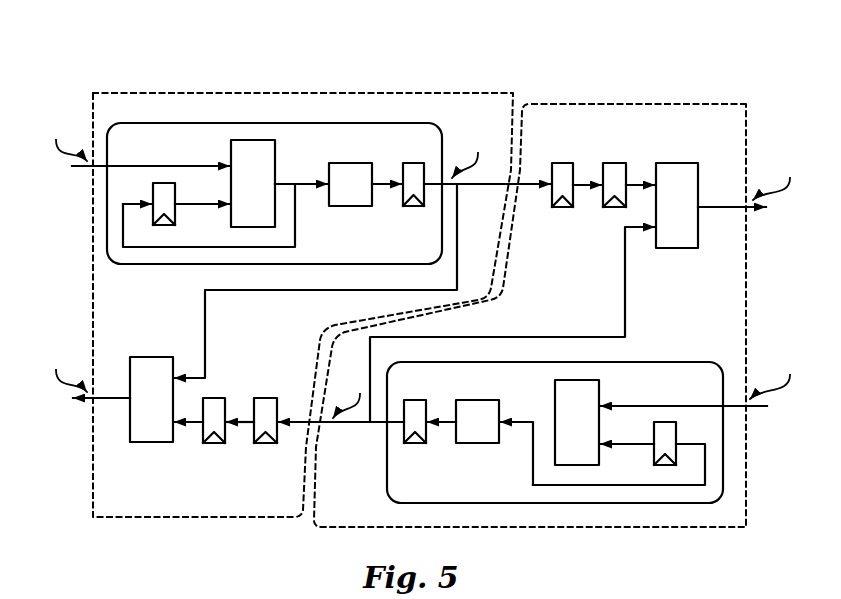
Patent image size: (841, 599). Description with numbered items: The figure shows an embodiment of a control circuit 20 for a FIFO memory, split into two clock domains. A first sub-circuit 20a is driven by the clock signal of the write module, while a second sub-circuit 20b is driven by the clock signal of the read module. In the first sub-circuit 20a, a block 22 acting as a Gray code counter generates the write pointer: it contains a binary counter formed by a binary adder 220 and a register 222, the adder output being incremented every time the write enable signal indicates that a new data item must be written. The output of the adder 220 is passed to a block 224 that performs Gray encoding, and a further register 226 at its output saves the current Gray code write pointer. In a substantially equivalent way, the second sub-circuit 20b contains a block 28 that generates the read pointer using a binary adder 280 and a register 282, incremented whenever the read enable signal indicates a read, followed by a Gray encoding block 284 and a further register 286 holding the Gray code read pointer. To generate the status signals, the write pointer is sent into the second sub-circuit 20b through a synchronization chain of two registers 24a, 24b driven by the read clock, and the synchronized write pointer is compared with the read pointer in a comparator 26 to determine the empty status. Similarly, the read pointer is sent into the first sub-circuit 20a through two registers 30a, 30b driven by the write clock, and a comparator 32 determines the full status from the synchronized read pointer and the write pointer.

The control circuit 20 is at (538, 57).
The first sub-circuit 20a is at (326, 93).
The second sub-circuit 20b is at (672, 104).
The block 22 is at (165, 123).
The binary adder 220 is at (251, 140).
The register 222 is at (165, 226).
The block 224 is at (349, 163).
The further register 226 is at (413, 163).
The register 24a is at (562, 163).
The register 24b is at (614, 163).
The comparator 26 is at (675, 163).
The block 28 is at (690, 362).
The binary adder 280 is at (573, 466).
The register 282 is at (665, 466).
The block 284 is at (478, 400).
The further register 286 is at (418, 400).
The register 30a is at (266, 398).
The register 30b is at (214, 398).
The comparator 32 is at (151, 357).